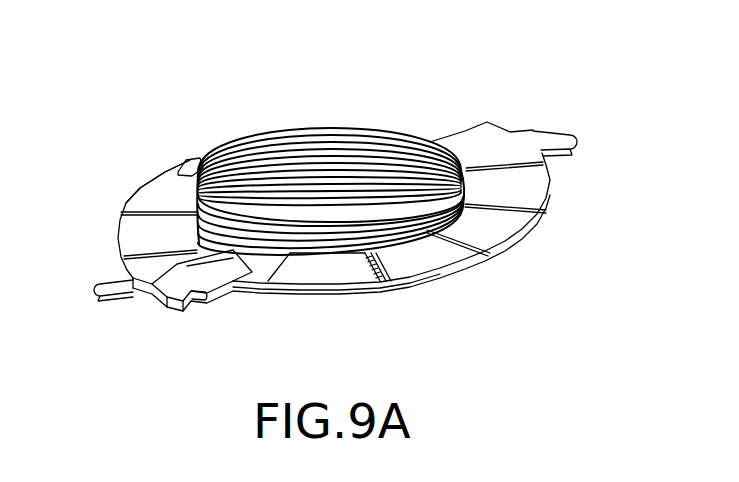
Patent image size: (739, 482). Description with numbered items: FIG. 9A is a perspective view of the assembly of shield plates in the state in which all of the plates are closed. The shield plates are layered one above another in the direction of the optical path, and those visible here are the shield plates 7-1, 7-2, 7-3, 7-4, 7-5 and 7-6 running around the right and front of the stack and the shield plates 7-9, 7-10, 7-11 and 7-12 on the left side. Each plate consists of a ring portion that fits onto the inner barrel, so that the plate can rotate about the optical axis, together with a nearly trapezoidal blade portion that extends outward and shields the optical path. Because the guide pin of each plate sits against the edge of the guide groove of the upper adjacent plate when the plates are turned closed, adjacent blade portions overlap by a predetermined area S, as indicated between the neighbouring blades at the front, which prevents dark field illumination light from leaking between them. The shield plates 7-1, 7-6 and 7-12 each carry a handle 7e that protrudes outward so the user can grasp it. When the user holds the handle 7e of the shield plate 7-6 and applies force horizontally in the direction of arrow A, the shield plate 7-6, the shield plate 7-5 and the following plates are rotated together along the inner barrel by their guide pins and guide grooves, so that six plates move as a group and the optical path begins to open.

The shield plate 7-1 is at (497, 133).
The shield plate 7-2 is at (517, 187).
The shield plate 7-3 is at (483, 227).
The shield plate 7-4 is at (430, 253).
The shield plate 7-5 is at (335, 278).
The shield plate 7-6 is at (278, 288).
The shield plate 7-9 is at (188, 167).
The shield plate 7-10 is at (170, 193).
The shield plate 7-11 is at (145, 230).
The shield plate 7-12 is at (138, 268).
The handle 7e is at (128, 292).
The overlap area S is at (376, 255).
The arrow A is at (266, 314).